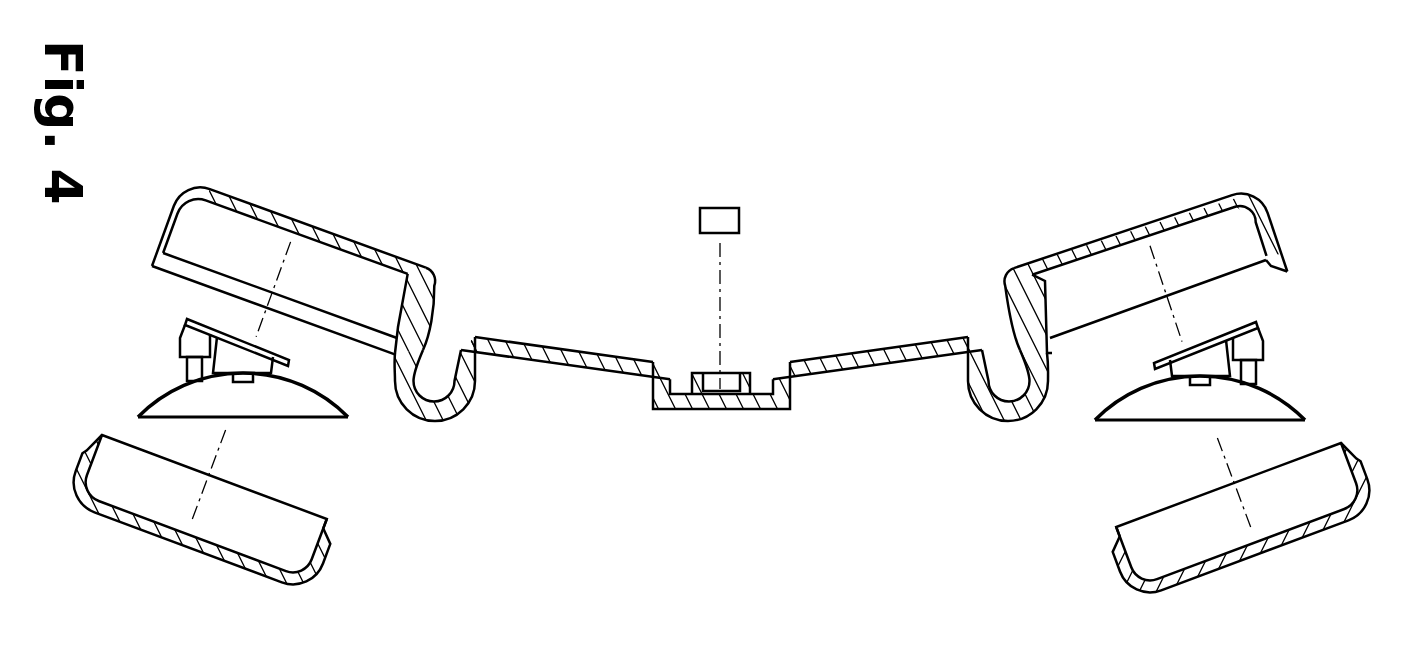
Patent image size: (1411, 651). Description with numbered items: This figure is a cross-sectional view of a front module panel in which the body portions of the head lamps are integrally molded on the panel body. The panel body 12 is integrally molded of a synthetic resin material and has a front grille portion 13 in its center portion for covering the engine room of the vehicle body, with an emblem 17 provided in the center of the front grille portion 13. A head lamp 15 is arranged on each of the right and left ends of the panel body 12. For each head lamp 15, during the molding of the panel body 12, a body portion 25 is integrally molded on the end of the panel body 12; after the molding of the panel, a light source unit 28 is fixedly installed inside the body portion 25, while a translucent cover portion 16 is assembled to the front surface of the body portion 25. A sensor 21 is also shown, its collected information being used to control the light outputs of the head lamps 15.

The panel body 12 is at (419, 421).
The front grille portion 13 is at (845, 360).
The head lamp 15 is at (313, 190).
The translucent cover portion 16 is at (145, 537).
The emblem 17 is at (670, 411).
The sensor 21 is at (720, 212).
The body portion 25 is at (394, 262).
The light source unit 28 is at (153, 388).